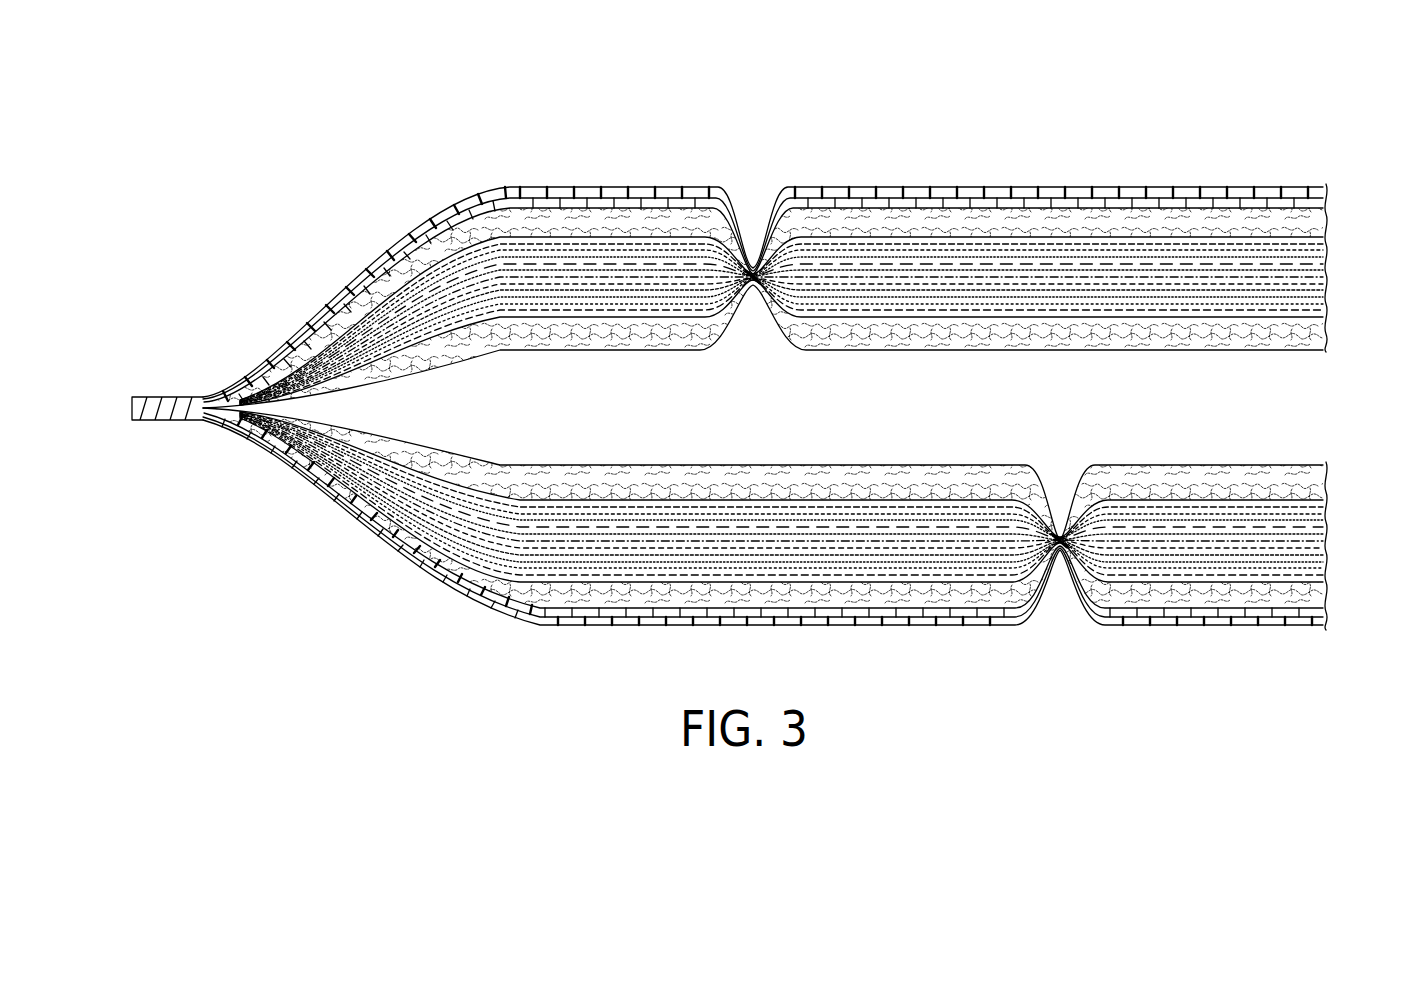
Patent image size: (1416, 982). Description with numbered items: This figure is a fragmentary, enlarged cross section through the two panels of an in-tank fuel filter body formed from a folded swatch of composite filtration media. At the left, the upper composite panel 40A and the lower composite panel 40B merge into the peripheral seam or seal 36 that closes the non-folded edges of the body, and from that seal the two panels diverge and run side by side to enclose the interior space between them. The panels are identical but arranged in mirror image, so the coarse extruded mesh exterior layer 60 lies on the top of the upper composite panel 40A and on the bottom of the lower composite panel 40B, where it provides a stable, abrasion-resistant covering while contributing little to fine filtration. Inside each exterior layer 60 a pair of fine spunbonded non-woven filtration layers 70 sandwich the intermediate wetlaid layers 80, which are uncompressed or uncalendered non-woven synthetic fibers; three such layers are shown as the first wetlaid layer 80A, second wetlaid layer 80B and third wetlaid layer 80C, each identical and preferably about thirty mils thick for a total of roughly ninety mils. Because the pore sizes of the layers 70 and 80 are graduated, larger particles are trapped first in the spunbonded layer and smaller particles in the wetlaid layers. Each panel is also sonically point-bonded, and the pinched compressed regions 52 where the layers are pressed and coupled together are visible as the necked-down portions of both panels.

The peripheral seam or seal 36 is at (168, 397).
The upper composite panel 40A is at (1081, 182).
The lower composite panel 40B is at (617, 649).
The compressed regions 52 is at (755, 262).
The exterior layer 60 is at (1170, 195).
The non-woven filtration layers 70 is at (1213, 226).
The wetlaid layers 80 is at (1333, 237).
The first wetlaid layer 80A is at (1265, 245).
The second wetlaid layer 80B is at (1304, 277).
The third wetlaid layer 80C is at (1306, 307).